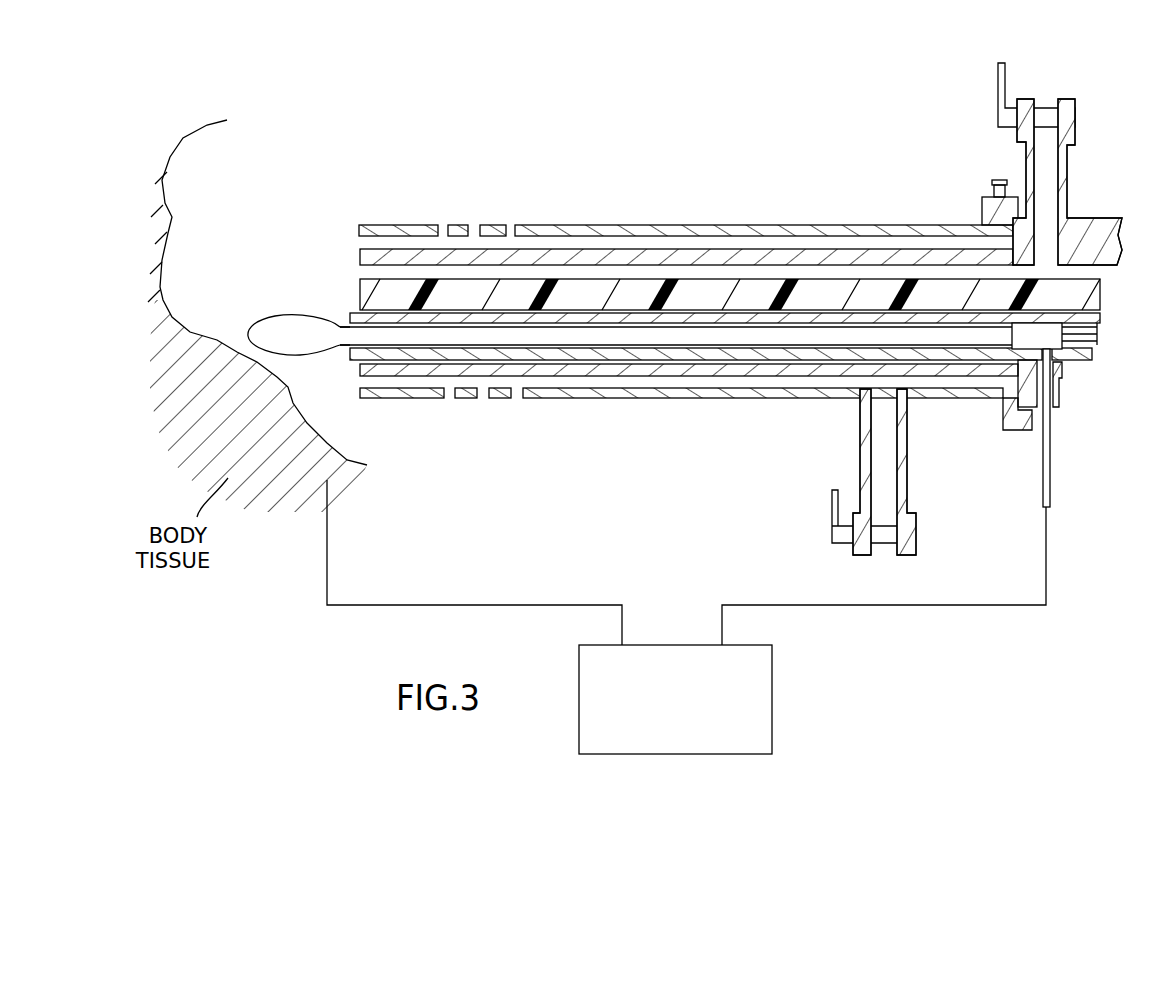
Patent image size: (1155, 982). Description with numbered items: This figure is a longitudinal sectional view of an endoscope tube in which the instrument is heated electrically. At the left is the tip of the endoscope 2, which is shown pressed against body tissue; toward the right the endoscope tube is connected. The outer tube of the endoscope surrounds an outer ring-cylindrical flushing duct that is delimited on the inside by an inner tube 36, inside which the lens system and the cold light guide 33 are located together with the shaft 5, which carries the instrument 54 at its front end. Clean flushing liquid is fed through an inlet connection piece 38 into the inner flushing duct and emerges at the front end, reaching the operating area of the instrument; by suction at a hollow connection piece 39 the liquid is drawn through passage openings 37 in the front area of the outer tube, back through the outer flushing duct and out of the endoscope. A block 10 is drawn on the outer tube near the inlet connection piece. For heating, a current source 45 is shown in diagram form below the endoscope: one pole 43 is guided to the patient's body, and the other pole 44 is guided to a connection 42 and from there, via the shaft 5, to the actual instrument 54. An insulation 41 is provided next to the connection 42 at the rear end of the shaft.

The tip of the endoscope 2 is at (360, 225).
The passage openings 37 is at (506, 222).
The inner tube 36 is at (360, 253).
The cold light guide 33 is at (360, 295).
The shaft 5 is at (636, 345).
The instrument 54 is at (318, 356).
The connector block 10 is at (982, 212).
The inlet connection piece 38 is at (1026, 162).
The connection 42 is at (1097, 338).
The insulation 41 is at (1072, 362).
The hollow connection piece 39 is at (860, 445).
The pole 43 is at (418, 605).
The pole 44 is at (898, 605).
The current source 45 is at (670, 756).